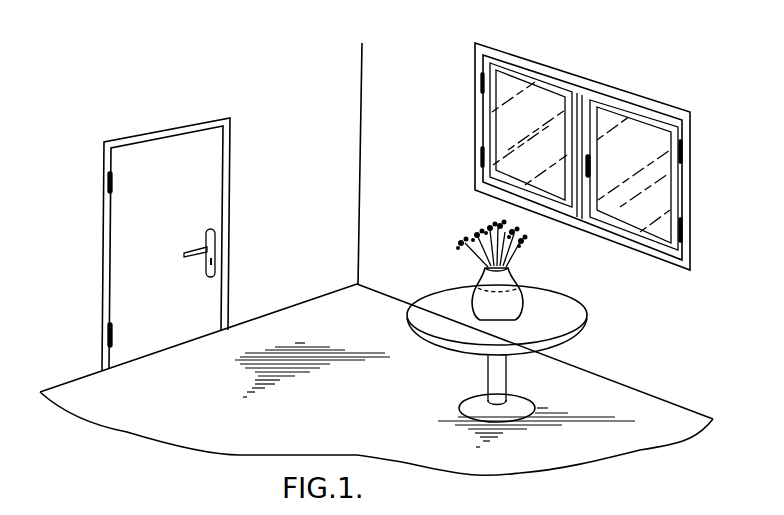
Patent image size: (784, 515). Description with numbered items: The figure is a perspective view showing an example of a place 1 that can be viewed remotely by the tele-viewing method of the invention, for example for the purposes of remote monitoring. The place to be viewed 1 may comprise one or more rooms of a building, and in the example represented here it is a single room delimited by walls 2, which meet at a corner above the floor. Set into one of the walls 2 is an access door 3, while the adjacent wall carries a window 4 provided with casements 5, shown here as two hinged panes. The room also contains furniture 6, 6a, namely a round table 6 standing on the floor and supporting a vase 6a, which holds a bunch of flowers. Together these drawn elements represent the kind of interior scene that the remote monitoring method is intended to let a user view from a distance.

The place 1 is at (158, 393).
The walls 2 is at (388, 100).
The access door 3 is at (155, 158).
The window 4 is at (619, 91).
The casements 5 is at (545, 103).
The table 6 is at (445, 300).
The vase 6a is at (495, 283).